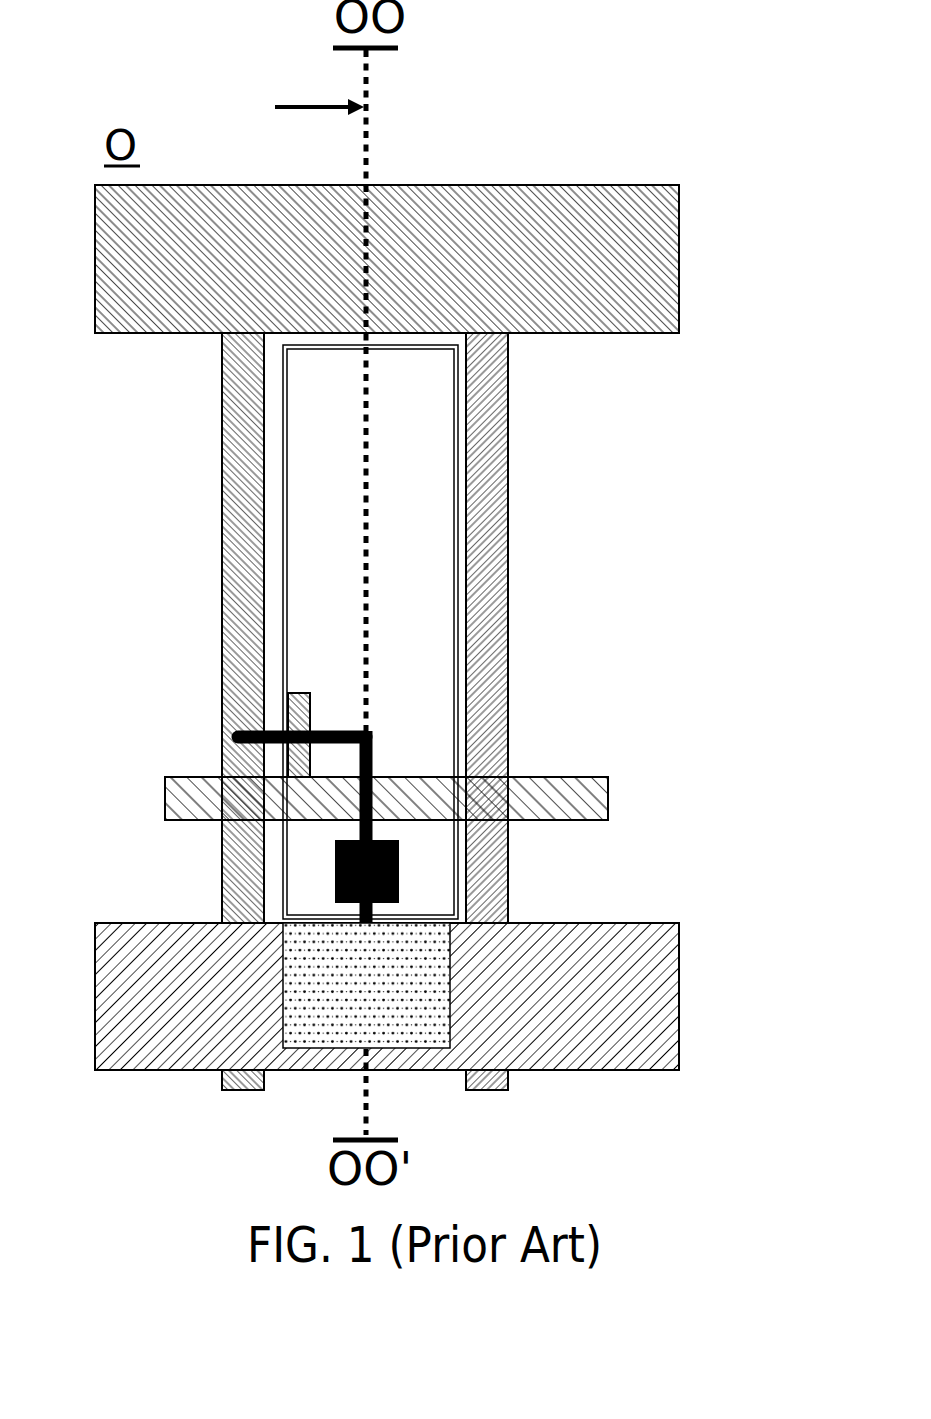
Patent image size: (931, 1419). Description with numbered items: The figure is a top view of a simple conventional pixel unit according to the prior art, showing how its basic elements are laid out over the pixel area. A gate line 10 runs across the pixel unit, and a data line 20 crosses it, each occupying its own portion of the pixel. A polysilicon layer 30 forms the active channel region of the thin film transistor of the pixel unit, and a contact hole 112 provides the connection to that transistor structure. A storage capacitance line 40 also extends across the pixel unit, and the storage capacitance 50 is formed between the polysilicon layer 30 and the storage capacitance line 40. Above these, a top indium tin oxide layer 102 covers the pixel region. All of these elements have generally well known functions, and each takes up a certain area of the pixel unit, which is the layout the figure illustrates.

The Cst (storage capacitance) line 40 is at (681, 278).
The data line 20 is at (230, 465).
The top ITO (Indium Tin Oxide) 102 is at (400, 550).
The gate line 10 is at (558, 775).
The polysilicon layer 30 is at (334, 726).
The contact hole 112 is at (402, 872).
The Cst (storage capacitance) 50 is at (387, 1021).